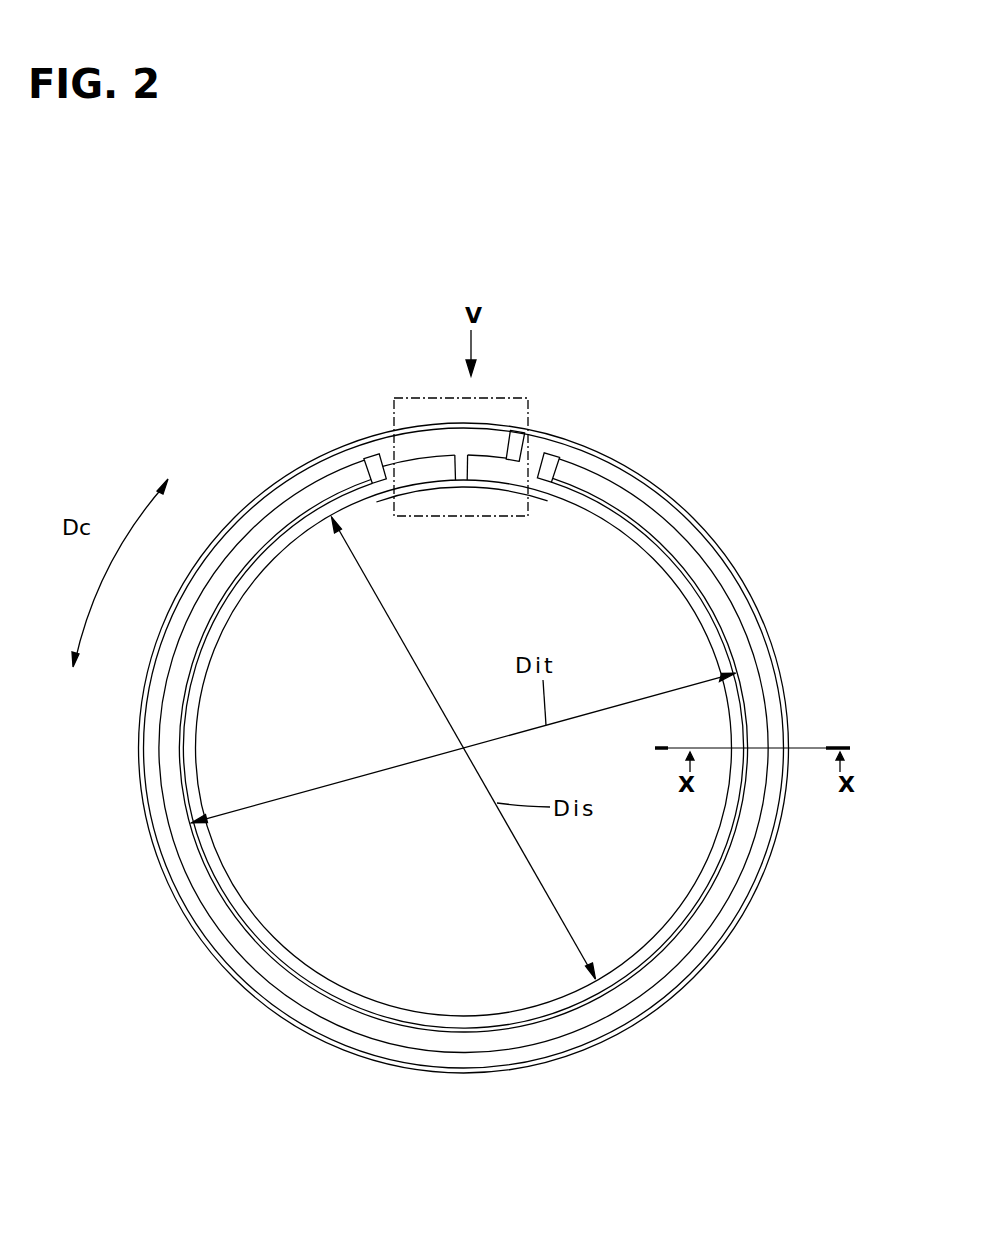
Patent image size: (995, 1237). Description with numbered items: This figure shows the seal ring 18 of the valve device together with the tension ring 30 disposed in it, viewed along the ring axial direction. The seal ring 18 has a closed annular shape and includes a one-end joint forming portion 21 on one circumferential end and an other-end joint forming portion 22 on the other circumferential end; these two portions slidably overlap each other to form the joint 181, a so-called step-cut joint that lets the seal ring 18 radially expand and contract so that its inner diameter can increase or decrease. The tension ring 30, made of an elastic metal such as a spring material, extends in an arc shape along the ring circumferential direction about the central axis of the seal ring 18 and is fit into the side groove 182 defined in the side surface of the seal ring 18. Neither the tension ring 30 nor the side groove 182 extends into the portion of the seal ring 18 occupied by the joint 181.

The seal ring 18 is at (715, 527).
The joint 181 is at (434, 446).
The side groove 182 is at (530, 433).
The one-end joint forming portion 21 is at (438, 440).
The other-end joint forming portion 22 is at (494, 468).
The tension ring 30 is at (702, 588).